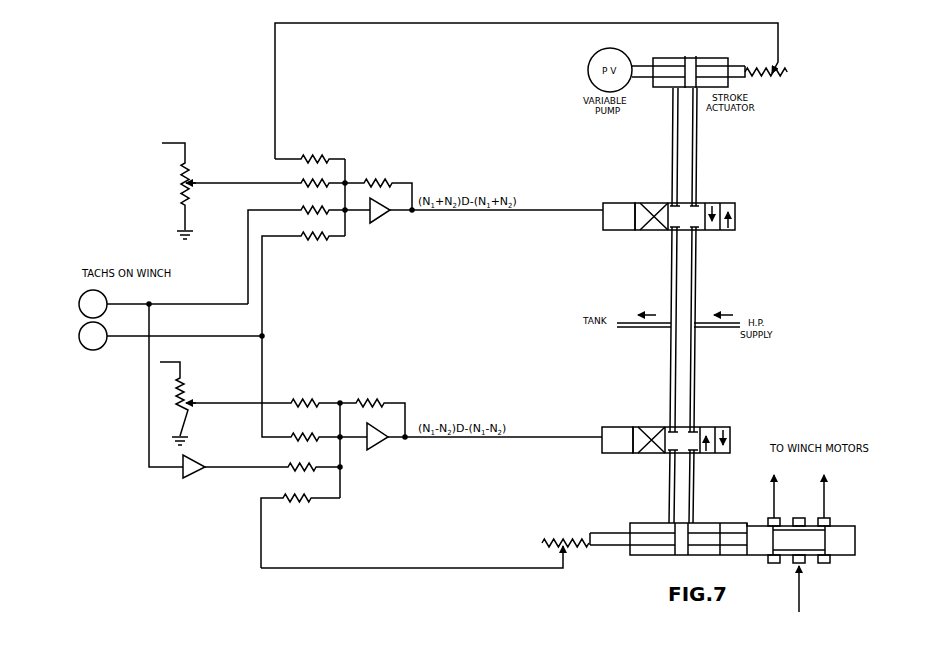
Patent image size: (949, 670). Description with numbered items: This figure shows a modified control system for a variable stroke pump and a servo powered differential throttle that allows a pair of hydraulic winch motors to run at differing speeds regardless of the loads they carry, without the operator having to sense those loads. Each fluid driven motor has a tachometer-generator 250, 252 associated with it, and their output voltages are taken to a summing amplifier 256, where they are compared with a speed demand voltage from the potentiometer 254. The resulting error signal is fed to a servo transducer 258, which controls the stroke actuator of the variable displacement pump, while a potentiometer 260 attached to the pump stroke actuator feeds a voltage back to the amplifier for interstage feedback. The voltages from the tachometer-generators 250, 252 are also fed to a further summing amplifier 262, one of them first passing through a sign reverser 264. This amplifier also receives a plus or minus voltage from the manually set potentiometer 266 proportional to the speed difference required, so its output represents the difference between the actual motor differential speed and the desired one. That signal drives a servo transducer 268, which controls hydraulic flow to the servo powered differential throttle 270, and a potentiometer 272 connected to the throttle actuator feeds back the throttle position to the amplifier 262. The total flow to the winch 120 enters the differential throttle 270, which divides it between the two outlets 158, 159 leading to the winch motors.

The tachometer-generator 250 is at (108, 297).
The tachometer-generator 252 is at (104, 346).
The potentiometer 254 is at (195, 170).
The summing amplifier 256 is at (376, 219).
The servo transducer 258 is at (612, 230).
The potentiometer 260 is at (783, 84).
The summing amplifier 262 is at (372, 447).
The sign reverser 264 is at (197, 474).
The potentiometer 266 is at (183, 400).
The servo transducer 268 is at (606, 453).
The servo powered differential throttle 270 is at (710, 523).
The potentiometer 272 is at (566, 540).
The winch motor supply line 158 is at (768, 496).
The winch motor supply line 159 is at (818, 496).
The total flow to winch line 120 is at (823, 591).